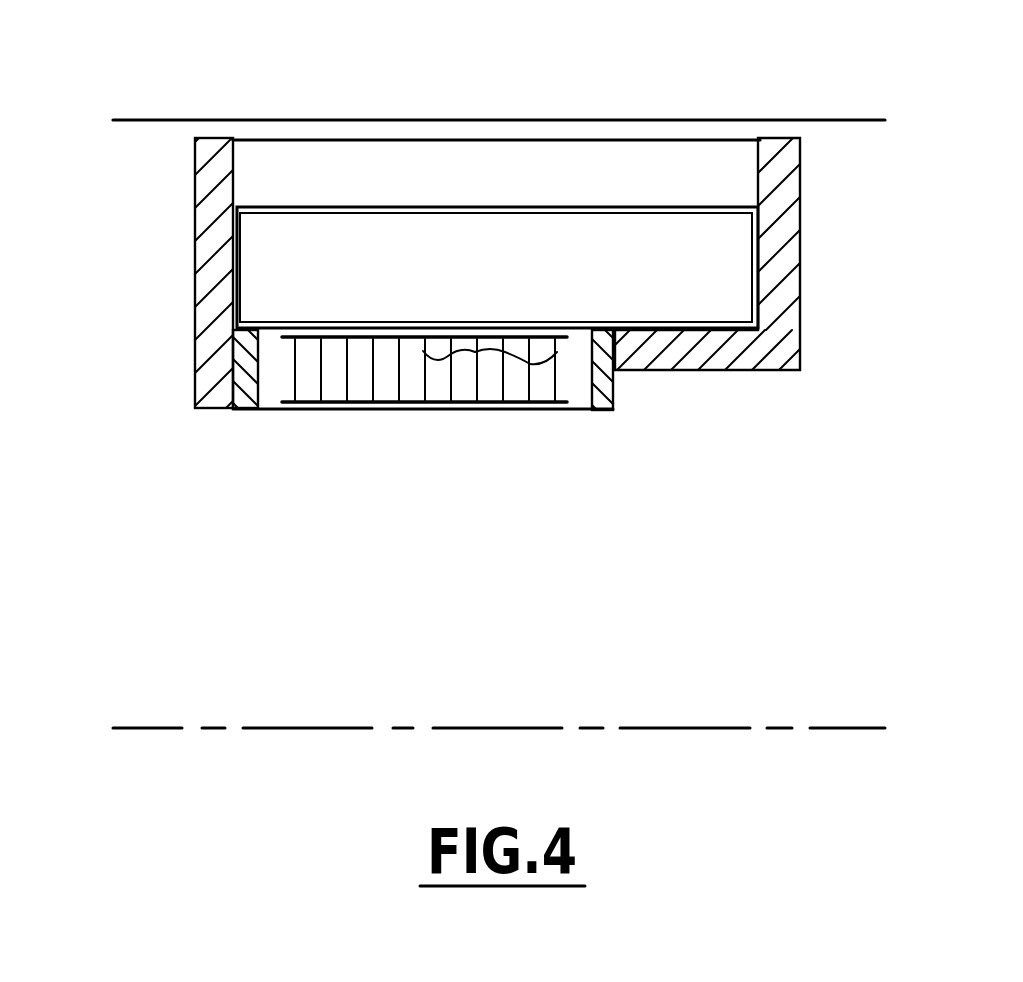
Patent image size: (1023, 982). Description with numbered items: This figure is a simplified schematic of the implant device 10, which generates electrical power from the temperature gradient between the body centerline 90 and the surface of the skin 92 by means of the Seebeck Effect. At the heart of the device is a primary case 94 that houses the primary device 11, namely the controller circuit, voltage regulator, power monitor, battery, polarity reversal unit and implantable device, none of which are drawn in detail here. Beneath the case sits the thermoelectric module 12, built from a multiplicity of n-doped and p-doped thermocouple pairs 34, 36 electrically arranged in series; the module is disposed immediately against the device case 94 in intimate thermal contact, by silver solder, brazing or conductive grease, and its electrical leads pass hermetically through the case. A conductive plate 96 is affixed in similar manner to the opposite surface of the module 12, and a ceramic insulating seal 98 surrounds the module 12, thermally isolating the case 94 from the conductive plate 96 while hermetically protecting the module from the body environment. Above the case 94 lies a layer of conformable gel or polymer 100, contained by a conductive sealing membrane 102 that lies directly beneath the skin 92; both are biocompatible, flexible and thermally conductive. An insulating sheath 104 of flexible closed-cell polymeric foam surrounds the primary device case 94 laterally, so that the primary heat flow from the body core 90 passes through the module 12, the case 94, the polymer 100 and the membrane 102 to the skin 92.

The implant device 10 is at (878, 193).
The primary device 11 is at (715, 280).
The thermoelectric module 12 is at (488, 355).
The n-doped thermocouple element 34 is at (340, 370).
The p-doped thermocouple element 36 is at (310, 367).
The body centerline 90 is at (723, 727).
The skin surface 92 is at (163, 121).
The primary case 94 is at (598, 204).
The conductive plate 96 is at (550, 410).
The ceramic insulating seal 98 is at (241, 382).
The conformable gel or polymer layer 100 is at (437, 173).
The conductive sealing membrane 102 is at (308, 140).
The insulating sheath 104 is at (213, 310).